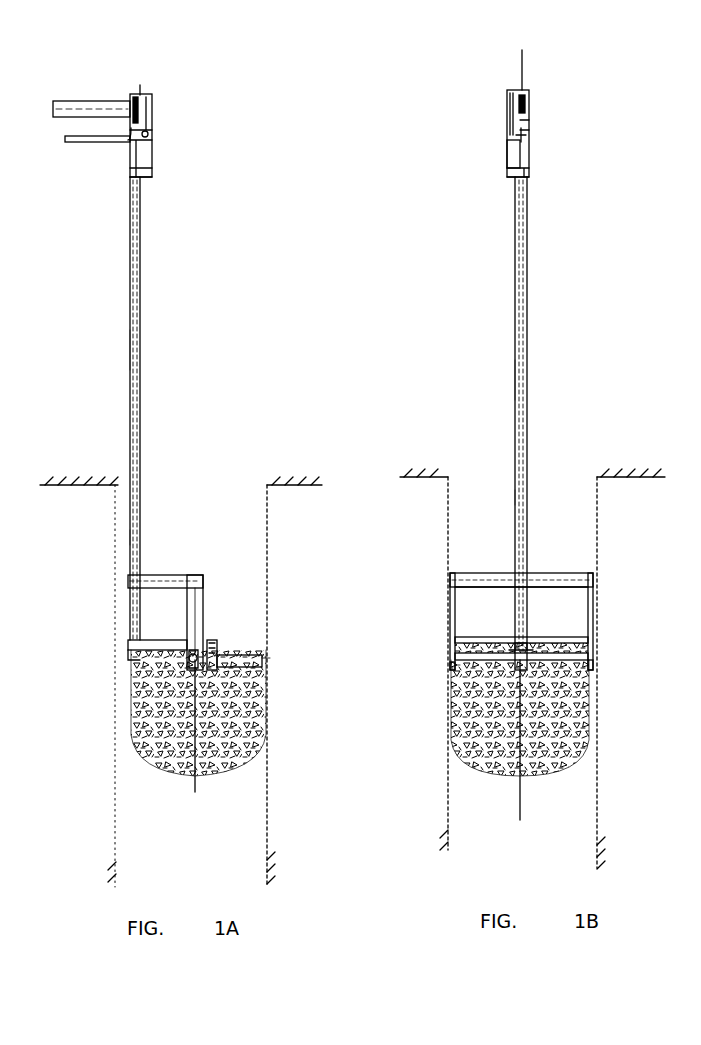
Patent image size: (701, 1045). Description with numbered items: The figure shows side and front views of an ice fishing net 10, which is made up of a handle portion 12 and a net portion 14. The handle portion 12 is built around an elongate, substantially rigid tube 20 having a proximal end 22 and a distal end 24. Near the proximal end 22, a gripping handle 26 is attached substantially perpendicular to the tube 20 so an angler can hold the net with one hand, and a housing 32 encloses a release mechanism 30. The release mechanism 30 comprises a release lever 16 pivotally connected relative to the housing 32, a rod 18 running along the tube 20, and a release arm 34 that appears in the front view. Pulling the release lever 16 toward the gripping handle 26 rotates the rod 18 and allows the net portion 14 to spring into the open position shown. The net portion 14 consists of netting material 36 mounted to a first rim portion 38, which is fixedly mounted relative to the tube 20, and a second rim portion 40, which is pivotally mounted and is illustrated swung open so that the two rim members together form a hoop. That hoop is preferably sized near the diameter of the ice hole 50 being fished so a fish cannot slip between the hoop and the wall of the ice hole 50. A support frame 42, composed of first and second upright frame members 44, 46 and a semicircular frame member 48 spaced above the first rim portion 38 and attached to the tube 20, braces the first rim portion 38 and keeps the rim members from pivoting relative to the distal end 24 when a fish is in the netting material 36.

In FIG. 1A, the ice fishing net 10 is at (222, 477).
In FIG. 1B, the ice fishing net 10 is at (575, 437).
In FIG. 1A, the handle portion 12 is at (140, 283).
In FIG. 1B, the handle portion 12 is at (527, 300).
In FIG. 1A, the net portion 14 is at (270, 657).
In FIG. 1B, the net portion 14 is at (470, 670).
In FIG. 1A, the release lever 16 is at (80, 143).
In FIG. 1A, the rod 18 is at (142, 537).
In FIG. 1B, the rod 18 is at (530, 495).
In FIG. 1A, the tube 20 is at (140, 353).
In FIG. 1B, the tube 20 is at (527, 393).
In FIG. 1A, the proximal end 22 is at (142, 183).
In FIG. 1B, the proximal end 22 is at (531, 184).
In FIG. 1A, the distal end 24 is at (127, 633).
In FIG. 1B, the distal end 24 is at (512, 652).
In FIG. 1A, the gripping handle 26 is at (50, 101).
In FIG. 1A, the release mechanism 30 is at (152, 135).
In FIG. 1B, the release mechanism 30 is at (530, 131).
In FIG. 1A, the housing 32 is at (153, 155).
In FIG. 1B, the housing 32 is at (506, 155).
In FIG. 1B, the release arm 34 is at (514, 652).
In FIG. 1A, the netting material 36 is at (215, 776).
In FIG. 1B, the netting material 36 is at (553, 765).
In FIG. 1A, the first rim portion 38 is at (148, 640).
In FIG. 1B, the first rim portion 38 is at (540, 640).
In FIG. 1A, the second rim portion 40 is at (228, 654).
In FIG. 1B, the second rim portion 40 is at (575, 665).
In FIG. 1A, the support frame 42 is at (178, 576).
In FIG. 1B, the support frame 42 is at (595, 582).
In FIG. 1A, the first upright frame member 44 is at (204, 605).
In FIG. 1B, the first upright frame member 44 is at (448, 606).
In FIG. 1B, the second upright frame member 46 is at (597, 610).
In FIG. 1B, the semicircular frame member 48 is at (535, 574).
In FIG. 1A, the ice hole 50 is at (102, 557).
In FIG. 1B, the ice hole 50 is at (605, 515).